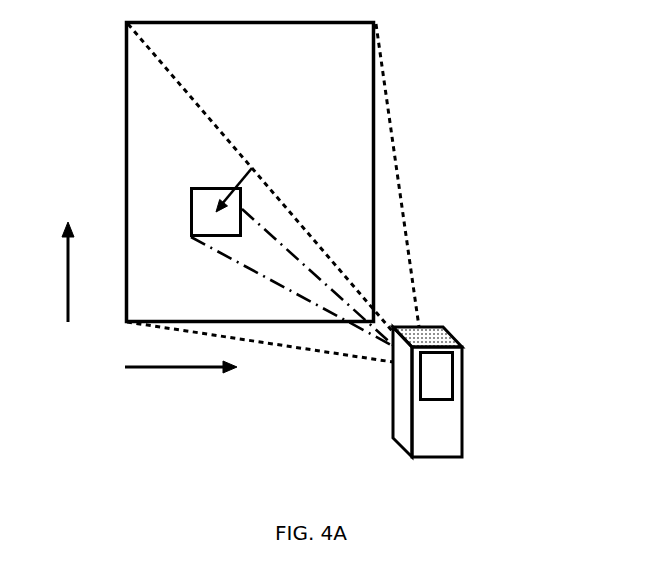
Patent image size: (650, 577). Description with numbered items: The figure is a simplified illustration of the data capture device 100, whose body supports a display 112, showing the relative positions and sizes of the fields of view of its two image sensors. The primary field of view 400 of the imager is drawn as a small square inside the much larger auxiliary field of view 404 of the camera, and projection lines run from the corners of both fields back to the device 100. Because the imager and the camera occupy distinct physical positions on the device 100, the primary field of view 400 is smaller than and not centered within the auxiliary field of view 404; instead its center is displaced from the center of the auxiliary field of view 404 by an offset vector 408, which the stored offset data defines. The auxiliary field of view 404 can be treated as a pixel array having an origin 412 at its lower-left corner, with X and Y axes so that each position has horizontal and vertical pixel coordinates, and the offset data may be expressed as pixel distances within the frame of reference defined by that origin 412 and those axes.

The device 100 is at (488, 374).
The display 112 is at (453, 378).
The primary field of view 400 is at (191, 210).
The auxiliary field of view 404 is at (374, 142).
The offset vector 408 is at (233, 180).
The origin 412 is at (126, 322).